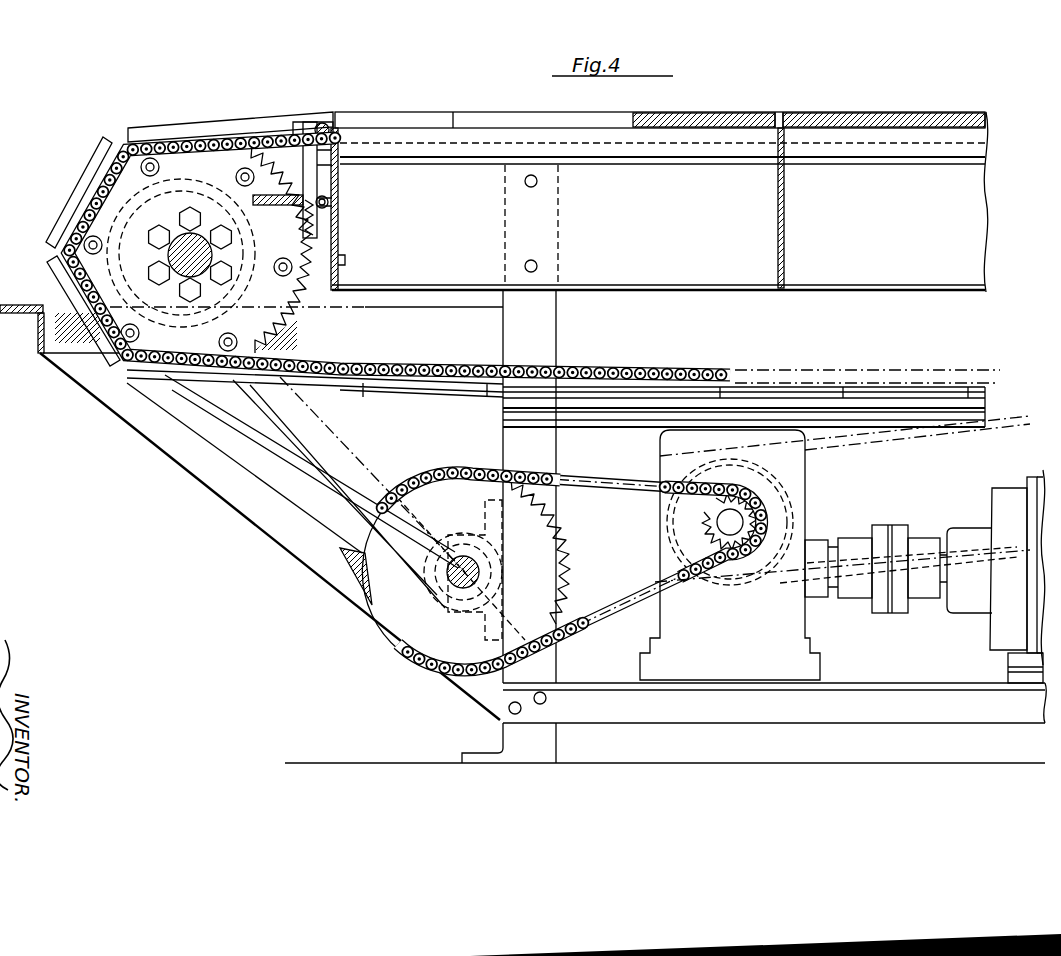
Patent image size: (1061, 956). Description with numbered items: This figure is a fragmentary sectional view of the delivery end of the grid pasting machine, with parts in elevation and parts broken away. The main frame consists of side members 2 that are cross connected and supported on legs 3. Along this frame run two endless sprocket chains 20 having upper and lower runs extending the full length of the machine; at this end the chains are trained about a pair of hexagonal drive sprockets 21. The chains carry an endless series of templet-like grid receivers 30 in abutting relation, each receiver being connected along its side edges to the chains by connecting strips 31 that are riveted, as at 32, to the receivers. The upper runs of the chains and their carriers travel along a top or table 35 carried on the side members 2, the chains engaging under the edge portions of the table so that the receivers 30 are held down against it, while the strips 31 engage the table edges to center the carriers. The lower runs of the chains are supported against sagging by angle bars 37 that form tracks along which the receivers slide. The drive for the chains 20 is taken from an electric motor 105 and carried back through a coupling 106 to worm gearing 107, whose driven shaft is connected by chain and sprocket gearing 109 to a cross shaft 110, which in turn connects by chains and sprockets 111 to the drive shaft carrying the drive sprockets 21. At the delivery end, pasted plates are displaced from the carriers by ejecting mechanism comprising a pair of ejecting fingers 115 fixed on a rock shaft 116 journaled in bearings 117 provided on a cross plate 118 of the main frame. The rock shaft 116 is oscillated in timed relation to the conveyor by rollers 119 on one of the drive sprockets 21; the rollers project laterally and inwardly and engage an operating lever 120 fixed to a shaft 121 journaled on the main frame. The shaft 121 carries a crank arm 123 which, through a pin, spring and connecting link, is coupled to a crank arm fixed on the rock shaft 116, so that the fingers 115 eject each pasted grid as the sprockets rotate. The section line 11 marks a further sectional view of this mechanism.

The side members 2 is at (679, 226).
The legs 3 is at (541, 350).
The section line 11 is at (381, 120).
The sprocket chains 20 is at (690, 367).
The hexagonal drive sprockets 21 is at (312, 313).
The grid receivers 30 is at (357, 112).
The connecting strips 31 is at (368, 372).
The rivets 32 is at (426, 380).
The table 35 is at (900, 138).
The angle bars 37 is at (753, 408).
The electric motor 105 is at (1013, 506).
The coupling 106 is at (851, 547).
The worm gearing 107 is at (647, 570).
The chain and sprocket gearing 109 is at (577, 620).
The cross shaft 110 is at (462, 580).
The chains and sprockets 111 is at (420, 457).
The ejecting fingers 115 is at (318, 122).
The rock shaft 116 is at (335, 133).
The bearings 117 is at (317, 158).
The cross plate 118 is at (338, 260).
The rollers 119 is at (160, 166).
The operating lever 120 is at (252, 197).
The shaft 121 is at (304, 192).
The crank arm 123 is at (317, 213).